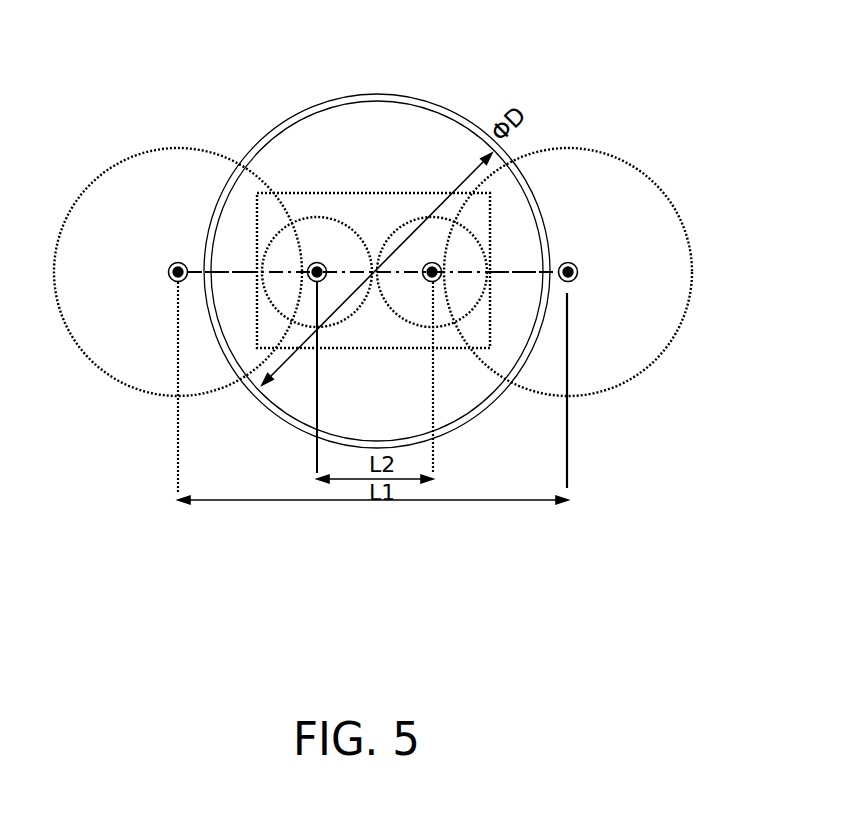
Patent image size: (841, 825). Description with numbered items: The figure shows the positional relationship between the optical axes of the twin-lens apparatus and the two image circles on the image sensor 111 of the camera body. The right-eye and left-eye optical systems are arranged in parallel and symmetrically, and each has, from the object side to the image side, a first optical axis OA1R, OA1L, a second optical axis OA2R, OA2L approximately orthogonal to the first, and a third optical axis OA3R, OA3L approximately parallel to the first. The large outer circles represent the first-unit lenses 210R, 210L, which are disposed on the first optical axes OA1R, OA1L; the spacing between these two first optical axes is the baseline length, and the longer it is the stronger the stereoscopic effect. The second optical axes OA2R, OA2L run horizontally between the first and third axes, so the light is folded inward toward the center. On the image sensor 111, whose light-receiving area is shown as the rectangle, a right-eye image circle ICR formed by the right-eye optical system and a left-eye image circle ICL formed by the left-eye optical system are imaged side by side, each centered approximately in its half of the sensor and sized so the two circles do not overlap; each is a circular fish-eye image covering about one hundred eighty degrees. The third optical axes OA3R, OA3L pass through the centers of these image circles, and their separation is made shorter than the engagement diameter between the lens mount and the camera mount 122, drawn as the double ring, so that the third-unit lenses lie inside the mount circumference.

The camera mount 122 is at (485, 138).
The image sensor 111 is at (432, 214).
The left-eye image circle ICL is at (315, 216).
The right-eye image circle ICR is at (408, 218).
The first-unit lens 210R is at (82, 348).
The first-unit lens 210L is at (668, 338).
The first optical axis OA1R is at (172, 282).
The second optical axis OA2R is at (228, 274).
The third optical axis OA3R is at (322, 282).
The first optical axis OA1L is at (575, 282).
The second optical axis OA2L is at (518, 274).
The third optical axis OA3L is at (436, 282).